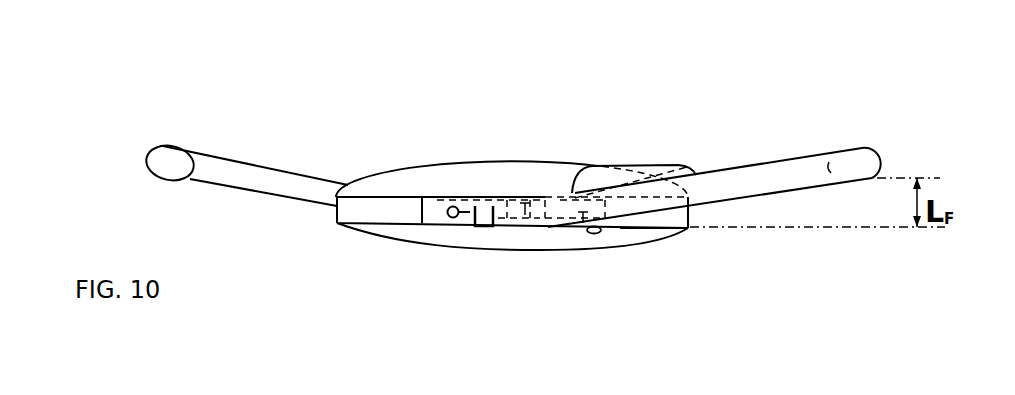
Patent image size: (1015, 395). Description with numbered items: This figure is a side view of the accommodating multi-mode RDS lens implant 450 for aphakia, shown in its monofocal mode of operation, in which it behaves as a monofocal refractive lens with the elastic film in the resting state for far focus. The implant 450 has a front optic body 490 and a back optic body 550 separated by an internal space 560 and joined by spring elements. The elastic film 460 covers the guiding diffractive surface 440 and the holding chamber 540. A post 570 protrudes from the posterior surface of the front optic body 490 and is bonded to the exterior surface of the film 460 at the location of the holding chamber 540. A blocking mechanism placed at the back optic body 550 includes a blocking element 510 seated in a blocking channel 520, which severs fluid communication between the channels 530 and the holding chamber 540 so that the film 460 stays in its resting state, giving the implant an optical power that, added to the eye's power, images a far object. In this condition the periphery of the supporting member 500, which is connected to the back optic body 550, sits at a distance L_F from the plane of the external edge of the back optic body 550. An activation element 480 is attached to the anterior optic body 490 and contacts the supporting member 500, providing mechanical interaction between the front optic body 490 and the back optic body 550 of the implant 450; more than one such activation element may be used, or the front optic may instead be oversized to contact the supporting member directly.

The guiding diffractive surface 440 is at (609, 216).
The implant 450 is at (868, 84).
The elastic film 460 is at (380, 190).
The activation element 480 is at (672, 161).
The front optic body 490 is at (453, 180).
The supporting member 500 is at (881, 163).
The blocking element 510 is at (464, 224).
The blocking channel 520 is at (496, 224).
The channels 530 is at (509, 192).
The holding chamber 540 is at (553, 230).
The back optic body 550 is at (690, 226).
The internal space 560 is at (447, 197).
The post 570 is at (559, 194).